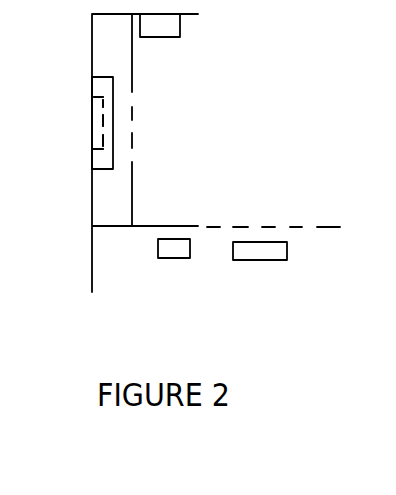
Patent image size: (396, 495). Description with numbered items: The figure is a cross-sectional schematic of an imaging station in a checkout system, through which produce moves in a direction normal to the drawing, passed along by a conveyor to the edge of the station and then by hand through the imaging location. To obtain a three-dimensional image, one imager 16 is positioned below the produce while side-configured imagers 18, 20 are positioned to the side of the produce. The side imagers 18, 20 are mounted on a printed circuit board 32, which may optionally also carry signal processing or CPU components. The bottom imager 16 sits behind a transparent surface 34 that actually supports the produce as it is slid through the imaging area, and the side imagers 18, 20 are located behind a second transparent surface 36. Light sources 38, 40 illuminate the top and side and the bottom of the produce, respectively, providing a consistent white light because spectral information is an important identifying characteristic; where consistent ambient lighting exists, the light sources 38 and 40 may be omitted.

The imager 16 is at (287, 250).
The imager 18 is at (72, 100).
The imager 20 is at (92, 113).
The printed circuit board 32 is at (96, 170).
The transparent surface 34 is at (298, 222).
The transparent surface 36 is at (140, 112).
The light source 38 is at (180, 30).
The light source 40 is at (170, 258).